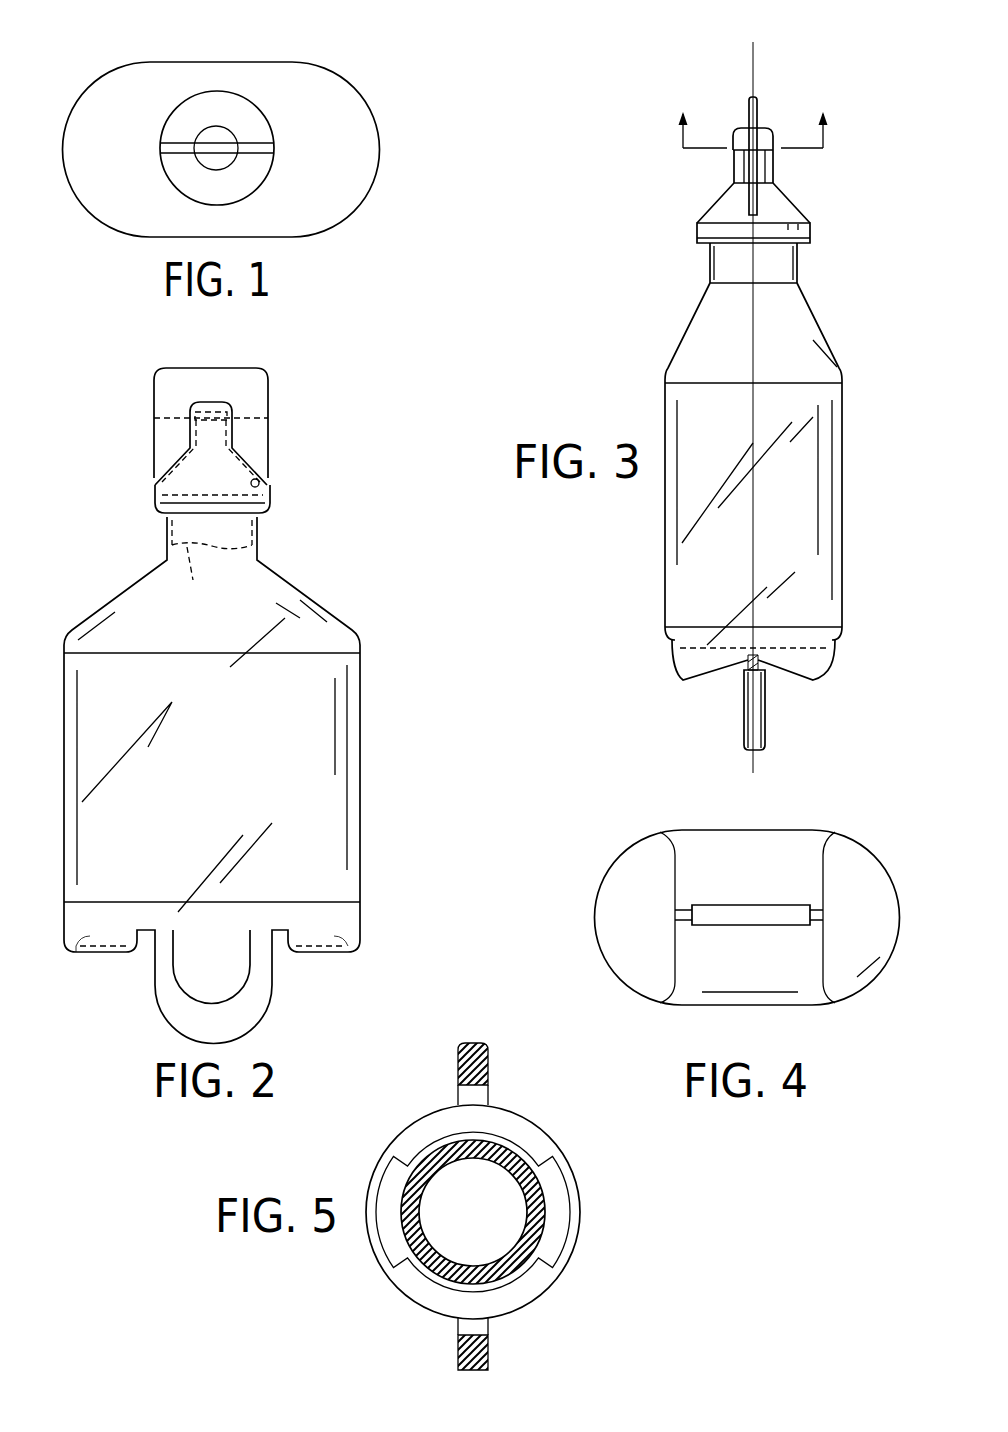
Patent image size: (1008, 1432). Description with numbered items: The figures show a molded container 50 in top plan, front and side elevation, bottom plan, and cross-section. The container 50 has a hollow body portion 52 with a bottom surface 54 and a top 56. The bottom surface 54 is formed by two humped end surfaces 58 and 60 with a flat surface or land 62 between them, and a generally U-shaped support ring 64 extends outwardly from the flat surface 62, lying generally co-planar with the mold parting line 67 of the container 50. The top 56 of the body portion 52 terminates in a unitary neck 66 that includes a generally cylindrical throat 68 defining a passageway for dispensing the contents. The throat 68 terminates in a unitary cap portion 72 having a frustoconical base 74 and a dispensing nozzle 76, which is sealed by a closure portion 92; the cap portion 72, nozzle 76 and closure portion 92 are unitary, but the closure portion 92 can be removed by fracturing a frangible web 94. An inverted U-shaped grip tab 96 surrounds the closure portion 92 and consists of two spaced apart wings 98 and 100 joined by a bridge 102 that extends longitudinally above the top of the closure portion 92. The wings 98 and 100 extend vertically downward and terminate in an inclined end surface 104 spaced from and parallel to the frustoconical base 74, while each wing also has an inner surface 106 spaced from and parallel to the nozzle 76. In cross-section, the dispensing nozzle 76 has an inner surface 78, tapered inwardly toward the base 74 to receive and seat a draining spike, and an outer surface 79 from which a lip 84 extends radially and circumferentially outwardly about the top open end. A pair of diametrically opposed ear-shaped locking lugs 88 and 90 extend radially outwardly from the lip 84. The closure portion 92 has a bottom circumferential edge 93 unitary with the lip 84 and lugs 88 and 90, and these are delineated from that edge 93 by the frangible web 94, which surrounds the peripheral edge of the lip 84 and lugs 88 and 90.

In FIG. 1, the container 50 is at (388, 166).
In FIG. 2, the container 50 is at (337, 560).
In FIG. 3, the container 50 is at (877, 348).
In FIG. 4, the container 50 is at (588, 938).
In FIG. 2, the hollow body portion 52 is at (360, 745).
In FIG. 3, the hollow body portion 52 is at (843, 540).
In FIG. 2, the bottom surface 54 is at (312, 960).
In FIG. 3, the bottom surface 54 is at (695, 688).
In FIG. 4, the bottom surface 54 is at (820, 834).
In FIG. 2, the top 56 is at (350, 653).
In FIG. 3, the top 56 is at (672, 345).
In FIG. 2, the humped end surface 58 is at (103, 953).
In FIG. 4, the humped end surface 58 is at (625, 890).
In FIG. 2, the humped end surface 60 is at (335, 952).
In FIG. 3, the humped end surface 60 is at (823, 663).
In FIG. 4, the humped end surface 60 is at (880, 905).
In FIG. 2, the flat surface or land 62 is at (213, 930).
In FIG. 4, the flat surface or land 62 is at (752, 980).
In FIG. 2, the support ring 64 is at (188, 1023).
In FIG. 3, the support ring 64 is at (765, 712).
In FIG. 4, the support ring 64 is at (748, 915).
In FIG. 1, the neck 66 is at (355, 150).
In FIG. 2, the neck 66 is at (317, 597).
In FIG. 3, the neck 66 is at (810, 305).
In FIG. 3, the mold parting line 67 is at (755, 537).
In FIG. 2, the throat 68 is at (193, 563).
In FIG. 3, the throat 68 is at (798, 265).
In FIG. 1, the cap portion 72 is at (165, 180).
In FIG. 2, the cap portion 72 is at (274, 500).
In FIG. 3, the cap portion 72 is at (814, 196).
In FIG. 1, the frustoconical base 74 is at (243, 182).
In FIG. 2, the frustoconical base 74 is at (170, 498).
In FIG. 3, the frustoconical base 74 is at (713, 222).
In FIG. 2, the dispensing nozzle 76 is at (212, 440).
In FIG. 3, the dispensing nozzle 76 is at (729, 166).
In FIG. 5, the dispensing nozzle 76 is at (552, 1212).
In FIG. 5, the inner surface 78 is at (418, 1216).
In FIG. 5, the outer surface 79 is at (540, 1182).
In FIG. 5, the lip 84 is at (485, 1135).
In FIG. 2, the locking lug 88 is at (211, 410).
In FIG. 5, the locking lug 88 is at (557, 1245).
In FIG. 5, the locking lug 90 is at (388, 1192).
In FIG. 1, the closure portion 92 is at (232, 124).
In FIG. 2, the closure portion 92 is at (240, 400).
In FIG. 3, the closure portion 92 is at (776, 125).
In FIG. 5, the closure portion 92 is at (577, 1156).
In FIG. 5, the bottom circumferential edge 93 is at (535, 1138).
In FIG. 5, the frangible web 94 is at (385, 1257).
In FIG. 1, the grip tab 96 is at (253, 136).
In FIG. 2, the grip tab 96 is at (245, 364).
In FIG. 3, the grip tab 96 is at (755, 93).
In FIG. 2, the wing 98 is at (253, 430).
In FIG. 5, the wing 98 is at (488, 1068).
In FIG. 2, the wing 100 is at (163, 411).
In FIG. 5, the wing 100 is at (488, 1345).
In FIG. 2, the bridge 102 is at (163, 389).
In FIG. 2, the inclined end surface 104 is at (259, 482).
In FIG. 2, the inner surface 106 is at (195, 442).